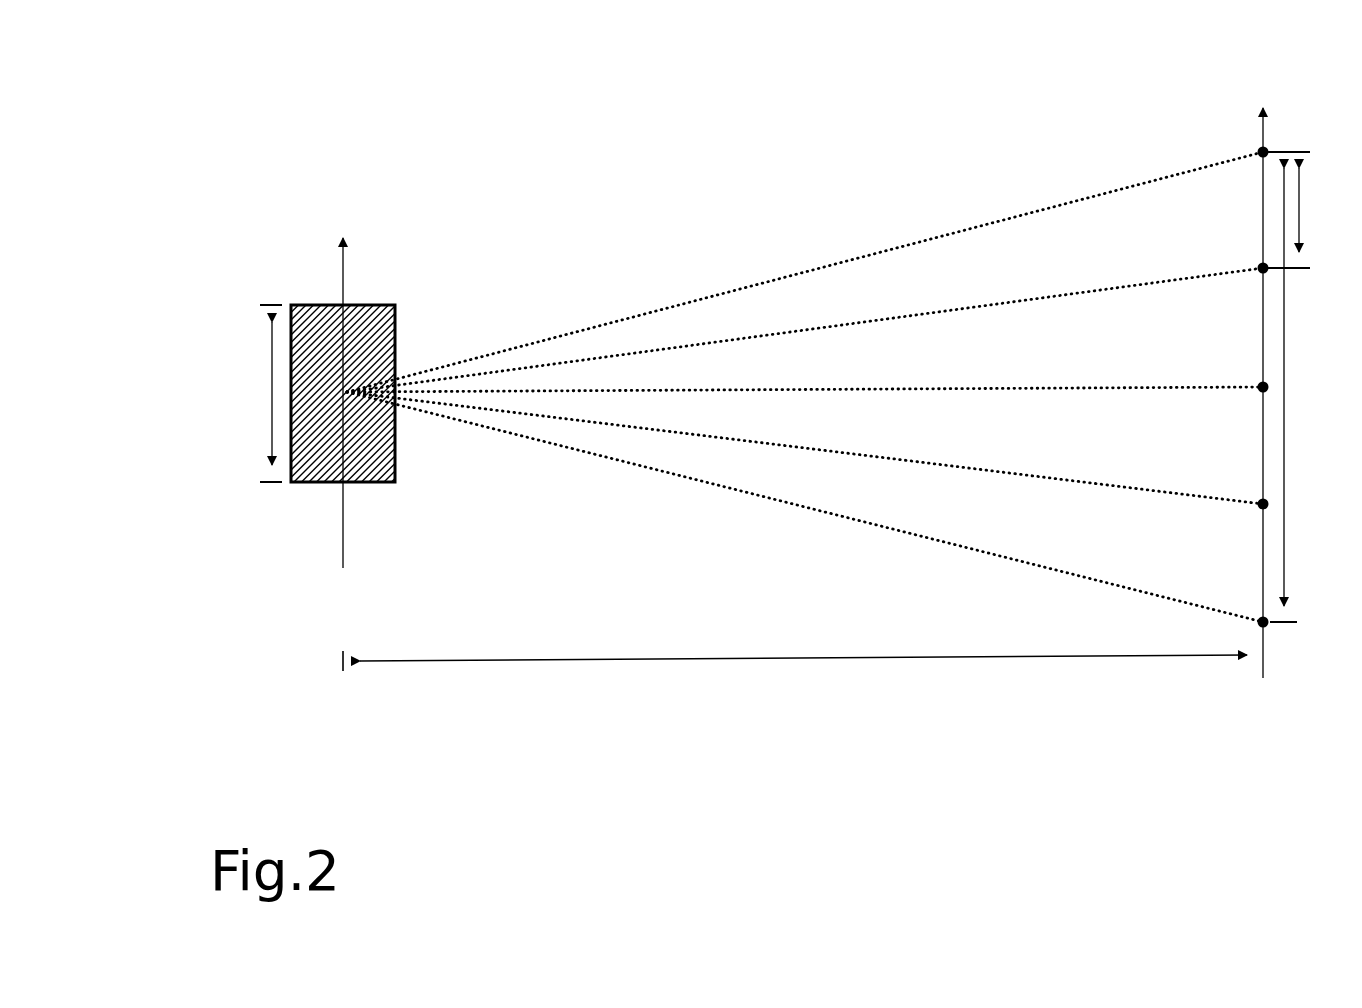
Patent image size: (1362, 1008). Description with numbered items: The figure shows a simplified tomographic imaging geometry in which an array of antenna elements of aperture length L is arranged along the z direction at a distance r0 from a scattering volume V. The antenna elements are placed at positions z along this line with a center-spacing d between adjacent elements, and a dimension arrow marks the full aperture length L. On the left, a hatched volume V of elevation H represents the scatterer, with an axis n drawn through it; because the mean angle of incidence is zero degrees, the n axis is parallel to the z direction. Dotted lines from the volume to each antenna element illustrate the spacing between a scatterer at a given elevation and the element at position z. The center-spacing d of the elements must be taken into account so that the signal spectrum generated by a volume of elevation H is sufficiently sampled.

The volume (aperture) of the radiating element V is at (341, 393).
The elevation of the volume H is at (251, 393).
The n axis n is at (343, 372).
The z direction z is at (1262, 362).
The center-spacing of the antenna elements d is at (1298, 210).
The aperture length L is at (1293, 395).
The distance from the radiating element to the observation line r0 is at (795, 635).